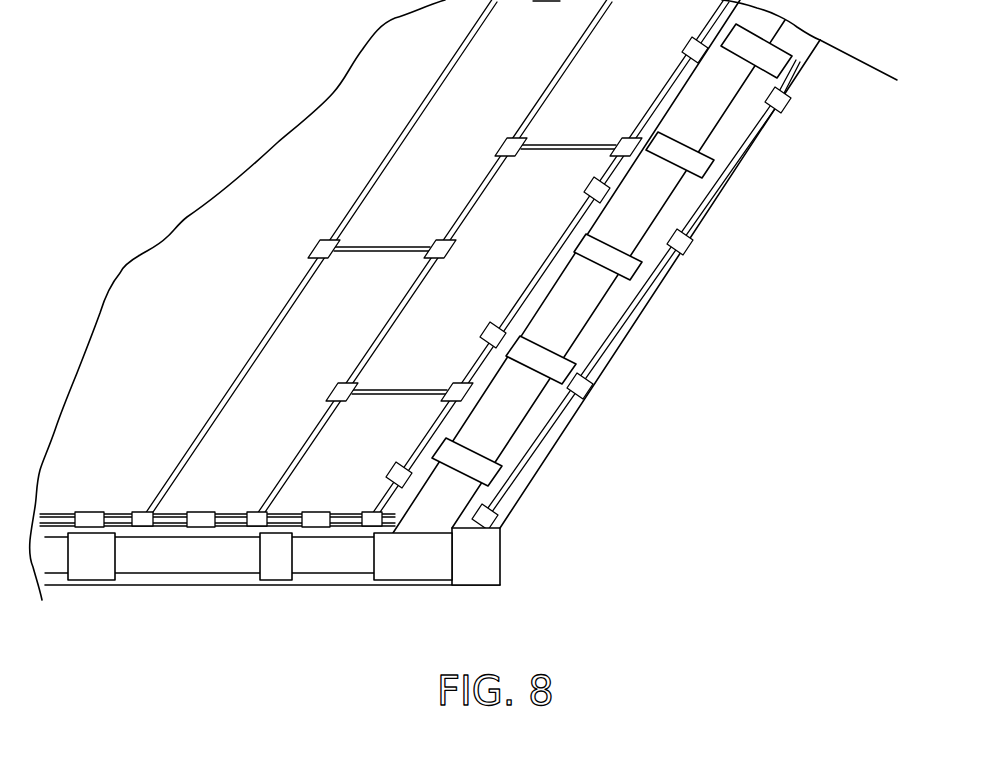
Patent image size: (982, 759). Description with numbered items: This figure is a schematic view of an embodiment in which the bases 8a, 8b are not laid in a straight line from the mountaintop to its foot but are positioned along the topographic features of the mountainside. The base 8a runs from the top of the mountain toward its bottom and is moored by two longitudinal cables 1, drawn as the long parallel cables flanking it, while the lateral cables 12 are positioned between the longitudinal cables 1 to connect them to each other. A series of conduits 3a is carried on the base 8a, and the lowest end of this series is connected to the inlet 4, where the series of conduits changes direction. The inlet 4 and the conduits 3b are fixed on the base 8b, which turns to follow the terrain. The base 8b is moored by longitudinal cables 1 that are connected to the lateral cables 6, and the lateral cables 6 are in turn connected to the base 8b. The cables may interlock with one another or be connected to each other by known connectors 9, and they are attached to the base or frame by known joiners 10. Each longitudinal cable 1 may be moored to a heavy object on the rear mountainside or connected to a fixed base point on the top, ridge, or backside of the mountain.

The longitudinal cable 1 is at (663, 83).
The conduits 3a is at (455, 497).
The conduits 3b is at (327, 567).
The inlet 4 is at (410, 570).
The lateral cable 6 is at (118, 514).
The base 8a is at (598, 323).
The base 8b is at (477, 572).
The connector 9 is at (449, 253).
The joiner 10 is at (192, 510).
The lateral cable 12 is at (388, 244).